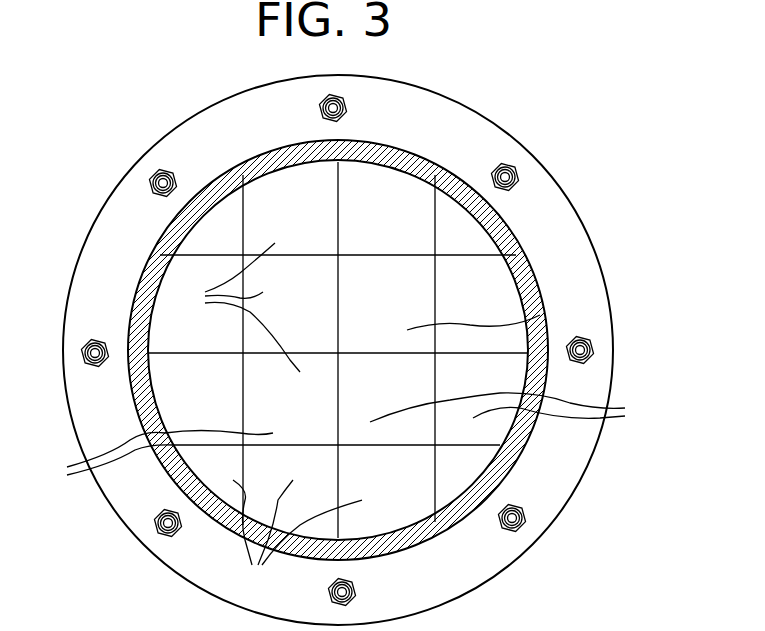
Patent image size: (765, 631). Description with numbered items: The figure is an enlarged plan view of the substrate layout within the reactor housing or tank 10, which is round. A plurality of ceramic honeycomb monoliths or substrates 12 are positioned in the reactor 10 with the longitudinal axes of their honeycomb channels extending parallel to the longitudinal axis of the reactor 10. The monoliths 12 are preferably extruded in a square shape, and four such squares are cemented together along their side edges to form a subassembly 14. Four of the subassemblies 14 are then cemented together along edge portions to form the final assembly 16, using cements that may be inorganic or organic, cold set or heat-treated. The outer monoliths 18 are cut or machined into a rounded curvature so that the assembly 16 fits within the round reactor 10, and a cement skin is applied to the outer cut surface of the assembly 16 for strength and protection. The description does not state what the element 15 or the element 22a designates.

The flange 22a is at (470, 137).
The reactor housing or tank 10 is at (513, 223).
The support wires 15 is at (433, 217).
The ceramic honeycomb monoliths or substrates 12 is at (236, 307).
The final assembly 16 is at (540, 315).
The subassembly 14 is at (351, 442).
The outer monoliths 18 is at (297, 538).